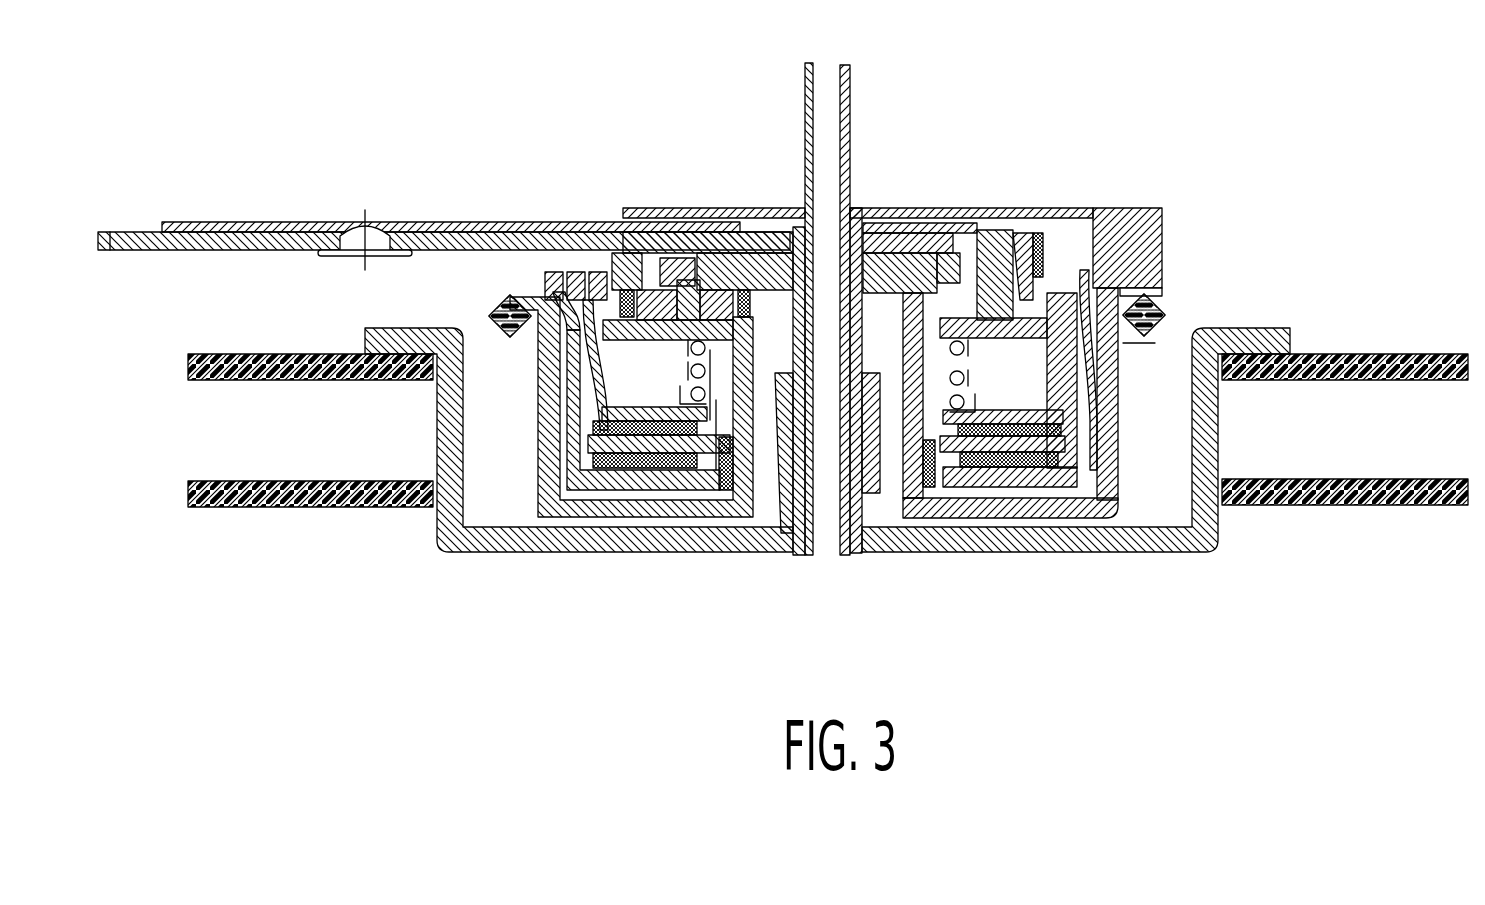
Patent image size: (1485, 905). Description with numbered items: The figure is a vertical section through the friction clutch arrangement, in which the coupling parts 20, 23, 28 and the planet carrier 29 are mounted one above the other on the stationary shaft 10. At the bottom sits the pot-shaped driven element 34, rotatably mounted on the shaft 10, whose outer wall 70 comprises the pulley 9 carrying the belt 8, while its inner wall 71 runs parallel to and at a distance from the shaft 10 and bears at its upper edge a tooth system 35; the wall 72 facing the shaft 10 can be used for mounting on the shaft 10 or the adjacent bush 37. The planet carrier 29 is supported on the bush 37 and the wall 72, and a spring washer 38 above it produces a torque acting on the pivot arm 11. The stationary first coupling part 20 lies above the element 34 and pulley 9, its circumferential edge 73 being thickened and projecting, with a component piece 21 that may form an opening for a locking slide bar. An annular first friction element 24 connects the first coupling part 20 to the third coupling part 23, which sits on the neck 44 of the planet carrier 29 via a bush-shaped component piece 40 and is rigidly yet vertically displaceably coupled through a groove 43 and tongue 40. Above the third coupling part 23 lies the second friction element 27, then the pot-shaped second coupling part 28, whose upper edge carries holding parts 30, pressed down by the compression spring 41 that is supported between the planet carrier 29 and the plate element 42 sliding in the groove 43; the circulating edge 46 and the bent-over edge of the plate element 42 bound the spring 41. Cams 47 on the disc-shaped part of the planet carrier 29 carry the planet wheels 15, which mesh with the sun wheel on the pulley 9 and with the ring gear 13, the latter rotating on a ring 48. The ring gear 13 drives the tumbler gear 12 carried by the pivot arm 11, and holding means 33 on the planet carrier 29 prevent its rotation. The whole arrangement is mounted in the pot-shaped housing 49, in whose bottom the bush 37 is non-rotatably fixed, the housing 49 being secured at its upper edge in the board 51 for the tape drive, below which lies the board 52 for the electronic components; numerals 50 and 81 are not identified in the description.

The belt 8 is at (1163, 316).
The pulley 9 is at (520, 338).
The stationary shaft 10 is at (804, 143).
The pivot arm 11 is at (462, 240).
The tumbler gear 12 is at (440, 224).
The ring gear 13 is at (925, 262).
The planet wheels 15 is at (616, 250).
The first coupling part 20 is at (1113, 423).
The component piece 21 is at (548, 272).
The third coupling part 23 is at (1066, 300).
The first friction element 24 is at (1108, 330).
The second friction element 27 is at (1002, 300).
The second coupling part 28 is at (1003, 430).
The planet carrier 29 is at (560, 420).
The holding parts 30 is at (568, 284).
The holding means 33 is at (594, 298).
The driven element 34 is at (1142, 260).
The tooth system 35 is at (724, 285).
The bush 37 is at (932, 272).
The spring washer 38 is at (768, 214).
The bush-shaped component piece 40 is at (690, 432).
The compression spring 41 is at (952, 300).
The plate element 42 is at (986, 300).
The groove 43 is at (725, 445).
The neck 44 is at (928, 482).
The circulating edge 46 is at (640, 440).
The cams 47 is at (656, 290).
The ring 48 is at (893, 264).
The pot-shaped housing 49 is at (1247, 330).
The housing 50 is at (575, 542).
The board for mounting the tape drive 51 is at (1296, 362).
The board for the electronic components 52 is at (1357, 483).
The outer wall 70 is at (1105, 480).
The inner wall 71 is at (733, 545).
The wall 72 is at (878, 452).
The circumferential edge 73 is at (1092, 266).
The rivet 81 is at (360, 215).